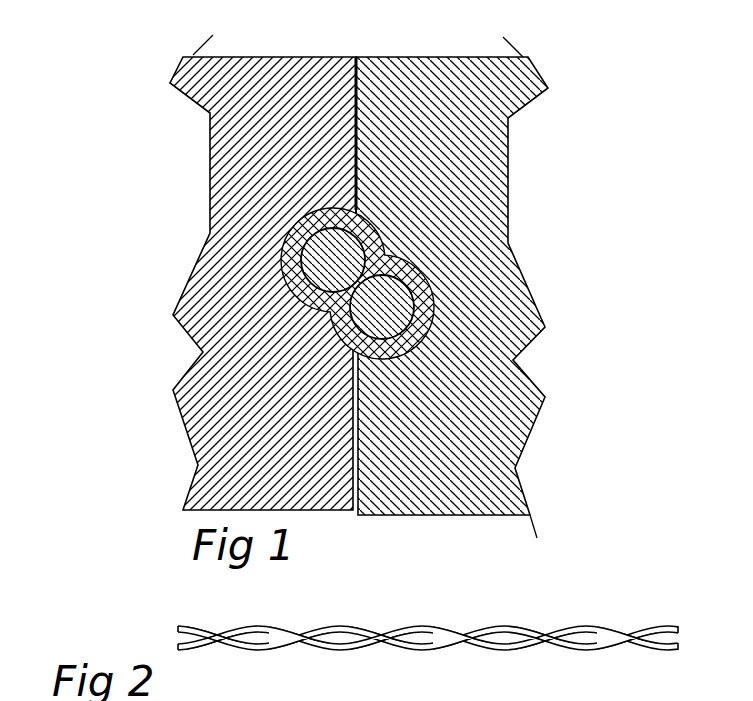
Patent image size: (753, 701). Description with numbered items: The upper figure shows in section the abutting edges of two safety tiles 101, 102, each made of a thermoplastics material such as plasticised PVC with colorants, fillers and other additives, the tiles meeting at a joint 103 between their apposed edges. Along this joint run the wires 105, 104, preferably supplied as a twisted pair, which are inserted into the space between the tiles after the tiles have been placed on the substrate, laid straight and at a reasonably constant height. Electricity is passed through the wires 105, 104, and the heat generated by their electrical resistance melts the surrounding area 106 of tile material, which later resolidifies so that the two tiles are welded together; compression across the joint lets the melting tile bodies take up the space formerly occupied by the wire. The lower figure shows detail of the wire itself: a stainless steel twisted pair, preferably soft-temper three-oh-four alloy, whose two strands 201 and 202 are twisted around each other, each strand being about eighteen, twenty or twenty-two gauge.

In FIG. 1, the safety tile 101 is at (257, 142).
In FIG. 1, the safety tile 102 is at (508, 158).
In FIG. 1, the seam between housing parts 103 is at (356, 57).
In FIG. 1, the wire 104 is at (308, 238).
In FIG. 1, the wire 105 is at (405, 285).
In FIG. 1, the surrounding area 106 is at (281, 250).
In FIG. 2, the strand 201 is at (427, 650).
In FIG. 2, the strand 202 is at (535, 650).